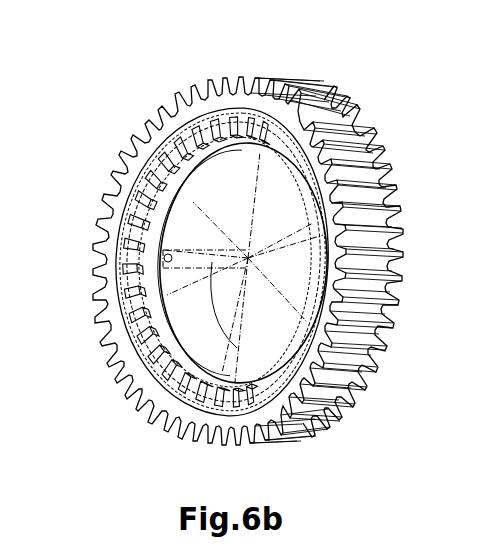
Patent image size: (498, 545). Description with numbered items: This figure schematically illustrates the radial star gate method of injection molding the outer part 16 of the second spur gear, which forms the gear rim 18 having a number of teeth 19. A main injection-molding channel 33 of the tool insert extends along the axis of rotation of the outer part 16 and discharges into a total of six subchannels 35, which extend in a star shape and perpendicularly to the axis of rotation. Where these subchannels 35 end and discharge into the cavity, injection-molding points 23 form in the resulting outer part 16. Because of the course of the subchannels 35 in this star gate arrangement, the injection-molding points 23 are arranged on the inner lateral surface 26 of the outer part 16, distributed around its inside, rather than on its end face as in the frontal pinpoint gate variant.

The outer part 16 is at (250, 233).
The gear rim 18 is at (250, 233).
The teeth 19 is at (328, 90).
The injection-molding points 23 is at (195, 188).
The inner lateral surface 26 is at (175, 223).
The main injection-molding channel 33 is at (152, 383).
The subchannels 35 is at (262, 383).